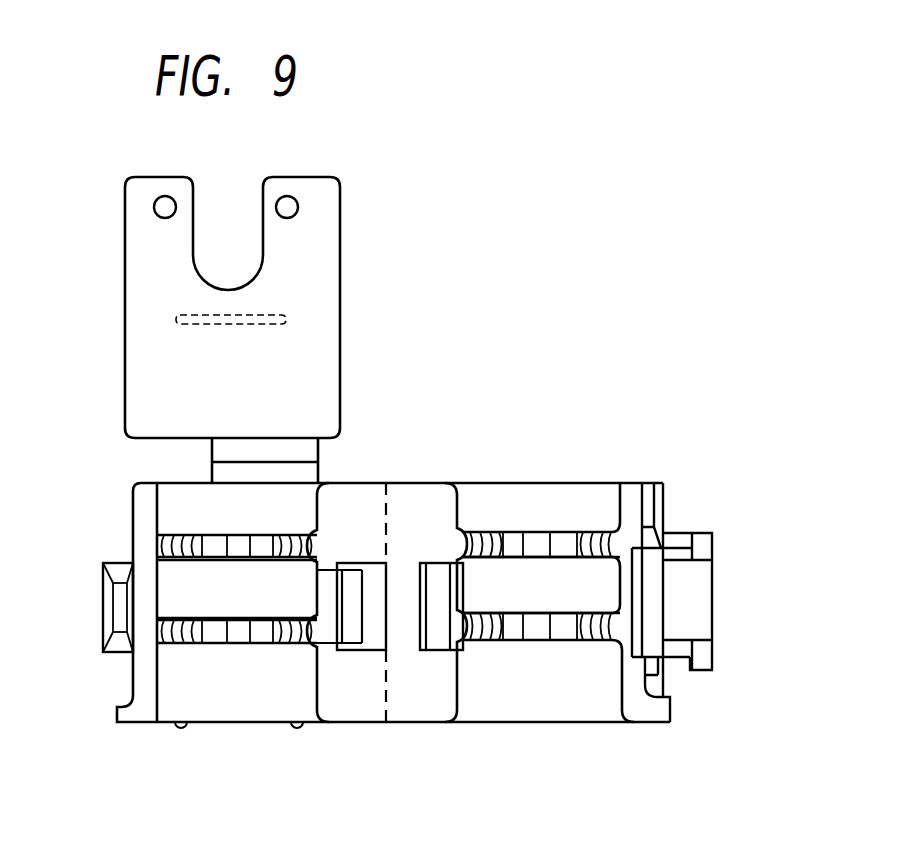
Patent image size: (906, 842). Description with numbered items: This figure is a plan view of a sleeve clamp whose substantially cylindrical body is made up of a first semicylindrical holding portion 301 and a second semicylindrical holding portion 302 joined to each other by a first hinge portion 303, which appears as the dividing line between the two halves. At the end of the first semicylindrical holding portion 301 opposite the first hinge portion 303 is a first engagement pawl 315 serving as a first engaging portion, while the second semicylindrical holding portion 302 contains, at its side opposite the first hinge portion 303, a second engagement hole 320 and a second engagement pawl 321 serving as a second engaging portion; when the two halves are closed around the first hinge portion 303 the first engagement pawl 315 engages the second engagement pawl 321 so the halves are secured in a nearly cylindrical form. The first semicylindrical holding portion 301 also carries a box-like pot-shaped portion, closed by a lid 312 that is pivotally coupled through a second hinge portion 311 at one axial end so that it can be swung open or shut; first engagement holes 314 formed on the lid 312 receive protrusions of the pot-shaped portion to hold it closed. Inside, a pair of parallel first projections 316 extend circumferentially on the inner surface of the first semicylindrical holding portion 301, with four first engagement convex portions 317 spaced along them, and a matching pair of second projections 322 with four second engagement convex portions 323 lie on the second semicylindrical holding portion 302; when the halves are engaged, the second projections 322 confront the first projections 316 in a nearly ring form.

The first semicylindrical holding portion 301 is at (393, 634).
The second semicylindrical holding portion 302 is at (553, 707).
The first hinge portion 303 is at (390, 700).
The second hinge portion 311 is at (322, 463).
The lid 312 is at (330, 255).
The first engagement holes 314 is at (163, 207).
The first engagement pawl 315 is at (120, 598).
The first projections 316 is at (203, 532).
The first engagement convex portions 317 is at (241, 628).
The second engagement hole 320 is at (653, 638).
The second engagement pawl 321 is at (695, 590).
The second projections 322 is at (565, 528).
The second engagement convex portions 323 is at (533, 537).